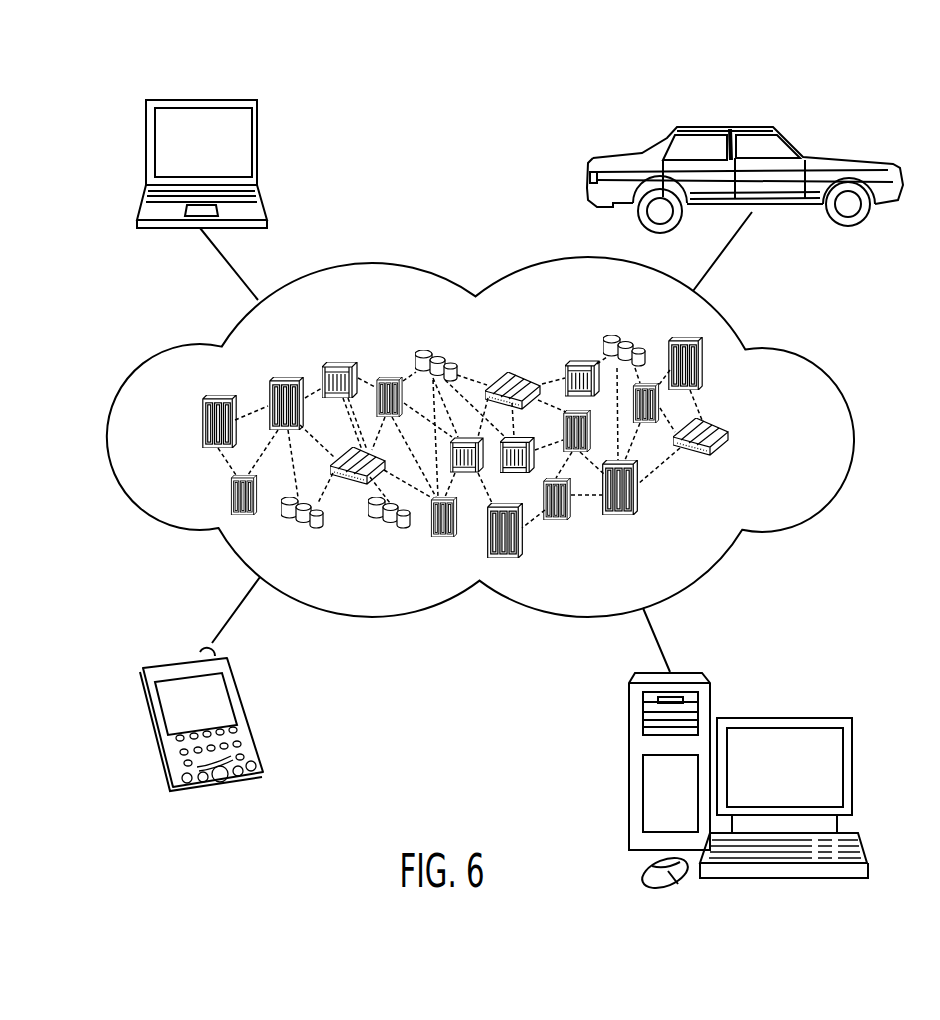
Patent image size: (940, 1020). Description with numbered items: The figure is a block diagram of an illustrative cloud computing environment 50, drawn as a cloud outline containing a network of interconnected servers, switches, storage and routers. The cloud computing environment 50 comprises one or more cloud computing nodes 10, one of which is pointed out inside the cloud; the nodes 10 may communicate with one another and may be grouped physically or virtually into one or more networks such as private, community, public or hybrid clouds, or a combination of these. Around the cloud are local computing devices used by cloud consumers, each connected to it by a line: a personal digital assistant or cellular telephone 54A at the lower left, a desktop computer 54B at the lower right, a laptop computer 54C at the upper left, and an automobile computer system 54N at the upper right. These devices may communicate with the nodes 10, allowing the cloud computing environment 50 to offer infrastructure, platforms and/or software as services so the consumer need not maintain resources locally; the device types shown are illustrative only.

The cloud computing environment 50 is at (798, 348).
The cloud computing node 10 is at (743, 438).
The personal digital assistant or cellular telephone 54A is at (183, 658).
The desktop computer 54B is at (784, 717).
The laptop computer 54C is at (200, 100).
The automobile computer system 54N is at (723, 124).